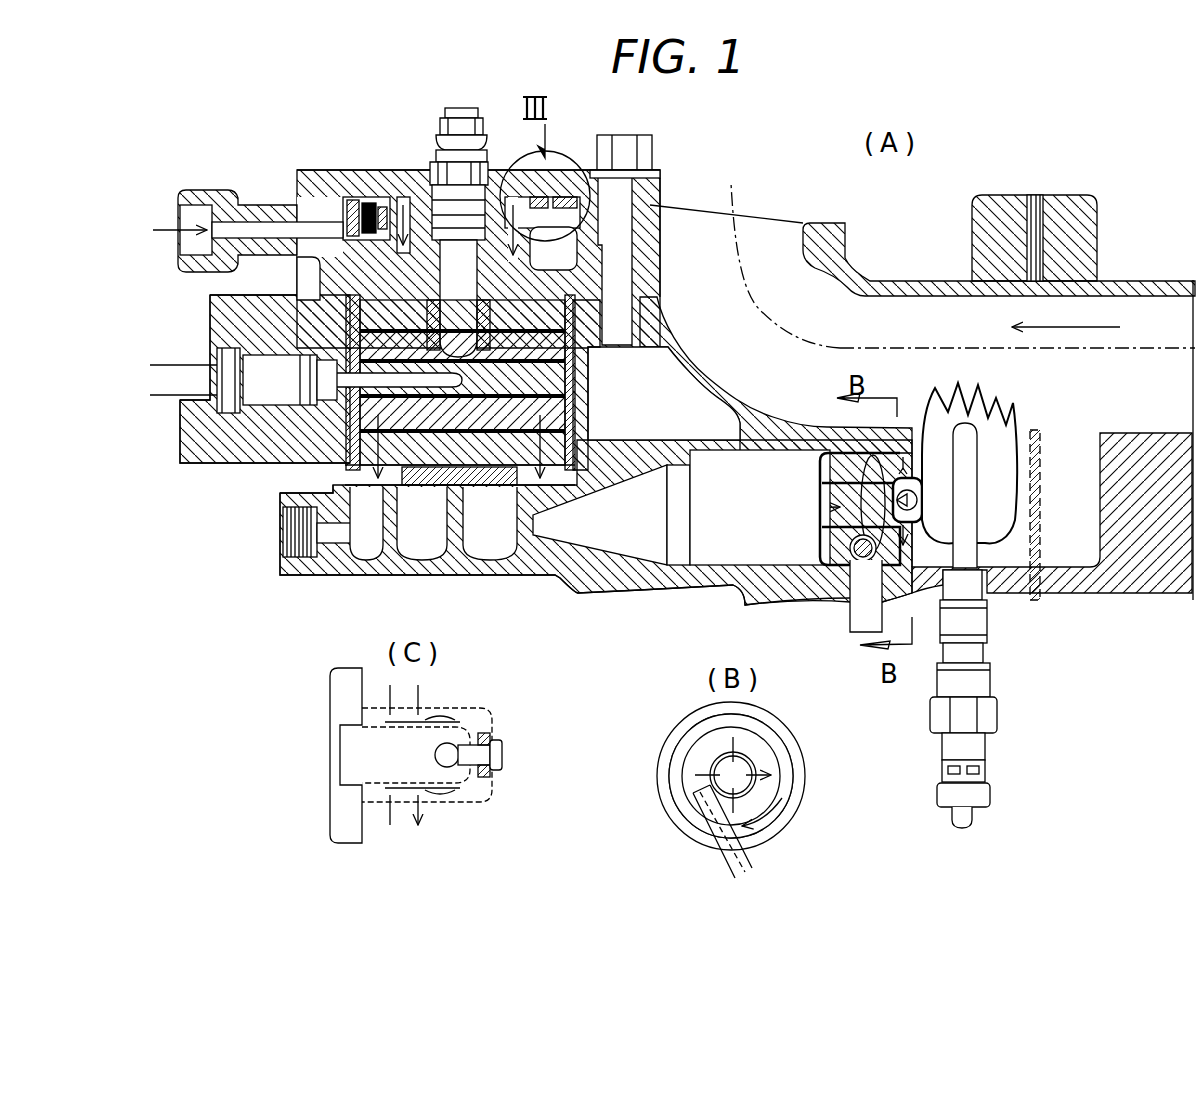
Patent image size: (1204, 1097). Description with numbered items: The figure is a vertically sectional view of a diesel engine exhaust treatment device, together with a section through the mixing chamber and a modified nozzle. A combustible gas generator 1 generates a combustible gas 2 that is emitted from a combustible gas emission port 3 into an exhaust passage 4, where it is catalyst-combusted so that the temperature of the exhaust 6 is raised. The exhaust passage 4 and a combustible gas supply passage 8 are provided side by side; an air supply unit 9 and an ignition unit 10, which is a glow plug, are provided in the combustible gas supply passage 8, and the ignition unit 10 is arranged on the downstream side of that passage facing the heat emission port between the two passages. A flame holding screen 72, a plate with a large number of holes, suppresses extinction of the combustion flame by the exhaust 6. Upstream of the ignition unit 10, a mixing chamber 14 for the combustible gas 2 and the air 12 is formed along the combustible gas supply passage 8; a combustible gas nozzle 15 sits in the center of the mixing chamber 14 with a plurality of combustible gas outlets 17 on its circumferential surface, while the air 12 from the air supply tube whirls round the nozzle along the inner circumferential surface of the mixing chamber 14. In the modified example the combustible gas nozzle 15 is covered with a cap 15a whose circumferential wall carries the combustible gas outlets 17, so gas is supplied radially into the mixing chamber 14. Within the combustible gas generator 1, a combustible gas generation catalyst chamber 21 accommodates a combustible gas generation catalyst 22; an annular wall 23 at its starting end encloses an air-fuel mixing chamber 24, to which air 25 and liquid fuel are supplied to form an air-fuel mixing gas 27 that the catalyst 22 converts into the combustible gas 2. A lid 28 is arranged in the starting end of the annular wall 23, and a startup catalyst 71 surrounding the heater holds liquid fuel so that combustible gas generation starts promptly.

The combustible gas generator 1 is at (235, 488).
The combustible gas 2 is at (318, 470).
The combustible gas emission port 3 is at (928, 438).
The exhaust passage 4 is at (878, 302).
The exhaust 6 is at (1085, 330).
The combustible gas supply passage 8 is at (703, 565).
The air supply unit 9 is at (850, 616).
The ignition unit 10 is at (965, 473).
The air 12 is at (825, 468).
The mixing chamber 14 is at (978, 590).
The combustible gas nozzle 15 is at (858, 462).
The cap 15a is at (470, 735).
The combustible gas outlets 17 is at (922, 500).
The combustible gas generation catalyst chamber 21 is at (570, 350).
The combustible gas generation catalyst 22 is at (570, 385).
The annular wall 23 is at (395, 197).
The air-fuel mixing chamber 24 is at (407, 205).
The air 25 is at (164, 228).
The air-fuel mixing gas 27 is at (325, 207).
The lid 28 is at (548, 178).
The startup catalyst 71 is at (458, 232).
The flame holding screen 72 is at (1037, 550).